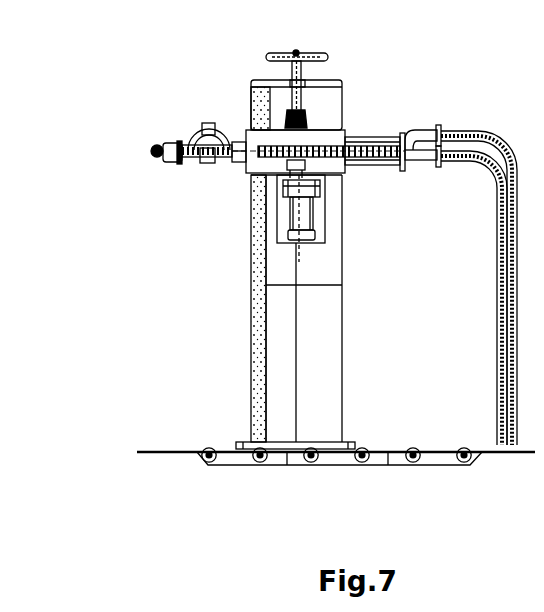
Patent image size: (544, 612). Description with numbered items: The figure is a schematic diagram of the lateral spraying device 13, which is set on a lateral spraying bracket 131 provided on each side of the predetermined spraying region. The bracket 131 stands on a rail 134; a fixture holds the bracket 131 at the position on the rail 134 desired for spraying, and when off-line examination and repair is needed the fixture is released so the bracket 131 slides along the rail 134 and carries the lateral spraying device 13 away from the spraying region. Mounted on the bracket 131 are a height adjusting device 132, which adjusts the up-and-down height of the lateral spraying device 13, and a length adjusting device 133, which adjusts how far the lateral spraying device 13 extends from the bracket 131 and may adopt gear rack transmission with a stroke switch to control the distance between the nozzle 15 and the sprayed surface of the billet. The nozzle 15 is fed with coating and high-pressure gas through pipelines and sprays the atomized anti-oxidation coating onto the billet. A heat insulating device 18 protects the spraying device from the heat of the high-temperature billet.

The lateral spraying device 13 is at (208, 105).
The nozzle 15 is at (155, 148).
The heat insulating device 18 is at (255, 302).
The lateral spraying bracket 131 is at (282, 360).
The height adjusting device 132 is at (293, 102).
The length adjusting device 133 is at (313, 148).
The rail 134 is at (237, 460).